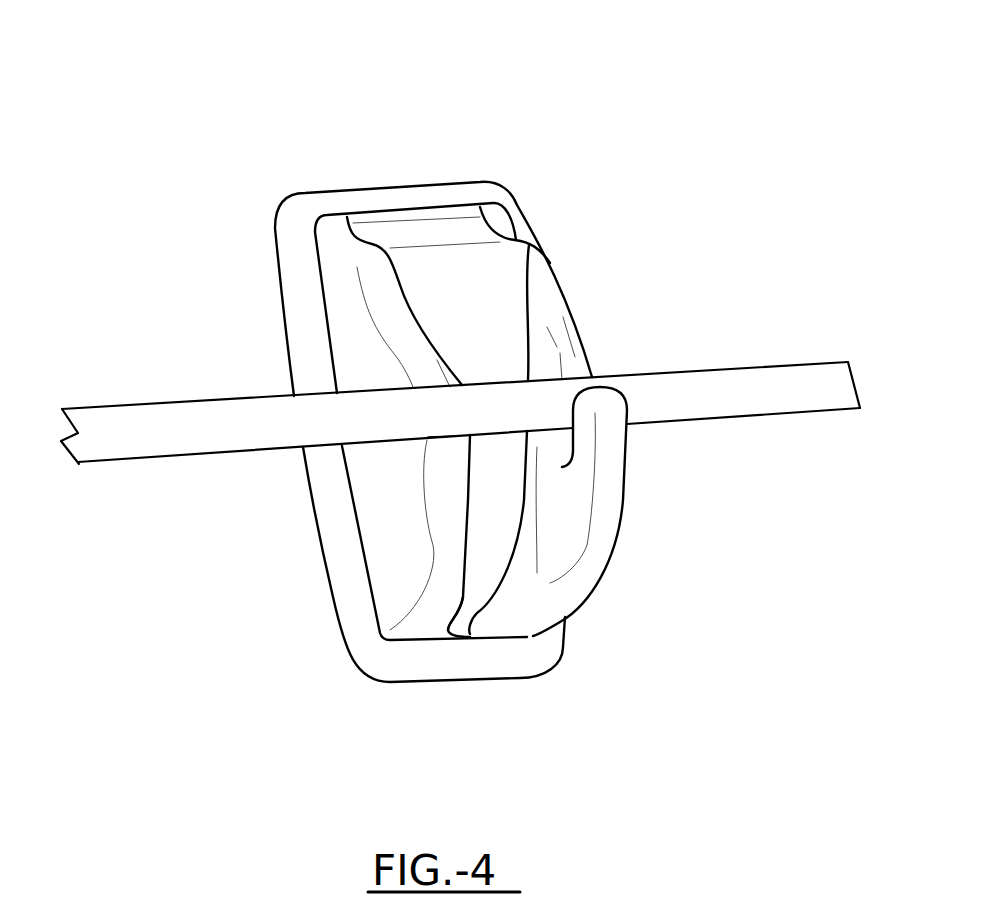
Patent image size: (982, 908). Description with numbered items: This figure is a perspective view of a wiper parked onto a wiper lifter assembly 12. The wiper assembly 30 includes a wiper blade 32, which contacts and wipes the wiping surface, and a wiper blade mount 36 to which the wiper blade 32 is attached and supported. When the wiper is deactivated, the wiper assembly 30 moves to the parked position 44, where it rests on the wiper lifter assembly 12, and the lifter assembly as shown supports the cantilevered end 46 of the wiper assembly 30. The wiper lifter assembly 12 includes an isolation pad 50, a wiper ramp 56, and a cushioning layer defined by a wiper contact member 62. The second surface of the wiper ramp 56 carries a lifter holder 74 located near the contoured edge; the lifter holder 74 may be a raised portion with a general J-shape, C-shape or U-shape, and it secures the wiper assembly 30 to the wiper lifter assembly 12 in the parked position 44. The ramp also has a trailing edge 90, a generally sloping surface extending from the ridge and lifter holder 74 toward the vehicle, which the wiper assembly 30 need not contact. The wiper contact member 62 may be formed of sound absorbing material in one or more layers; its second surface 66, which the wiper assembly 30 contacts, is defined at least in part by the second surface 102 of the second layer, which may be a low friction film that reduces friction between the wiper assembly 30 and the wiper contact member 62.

The wiper lifter assembly 12 is at (530, 147).
The wiper assembly 30 is at (737, 478).
The wiper blade 32 is at (748, 358).
The wiper blade mount 36 is at (815, 397).
The parked position 44 is at (128, 400).
The cantilevered end 46 is at (848, 387).
The isolation pad 50 is at (333, 197).
The wiper ramp 56 is at (503, 220).
The wiper contact member 62 is at (508, 297).
The second surface of wiper contact member 66 is at (440, 293).
The lifter holder 74 is at (618, 418).
The trailing edge 90 is at (477, 610).
The second surface of second layer 102 is at (498, 267).